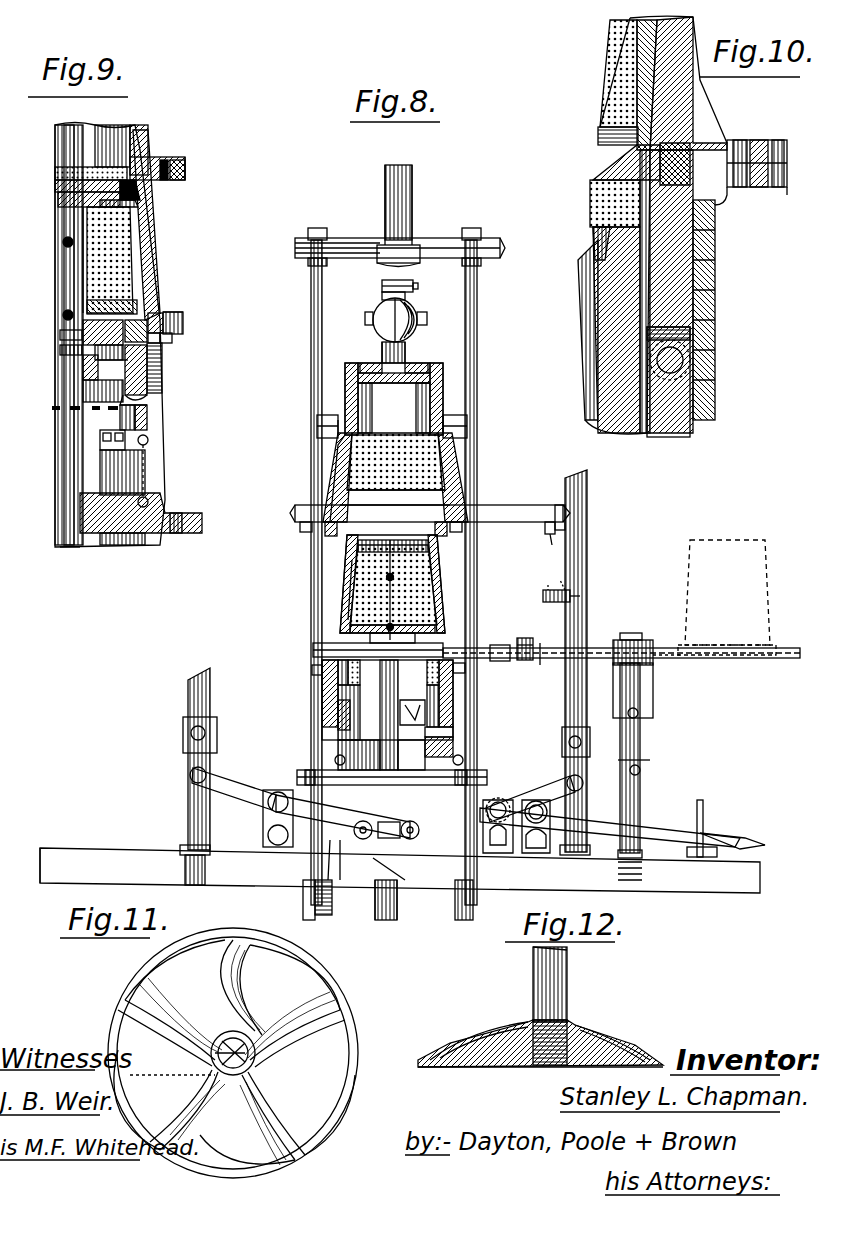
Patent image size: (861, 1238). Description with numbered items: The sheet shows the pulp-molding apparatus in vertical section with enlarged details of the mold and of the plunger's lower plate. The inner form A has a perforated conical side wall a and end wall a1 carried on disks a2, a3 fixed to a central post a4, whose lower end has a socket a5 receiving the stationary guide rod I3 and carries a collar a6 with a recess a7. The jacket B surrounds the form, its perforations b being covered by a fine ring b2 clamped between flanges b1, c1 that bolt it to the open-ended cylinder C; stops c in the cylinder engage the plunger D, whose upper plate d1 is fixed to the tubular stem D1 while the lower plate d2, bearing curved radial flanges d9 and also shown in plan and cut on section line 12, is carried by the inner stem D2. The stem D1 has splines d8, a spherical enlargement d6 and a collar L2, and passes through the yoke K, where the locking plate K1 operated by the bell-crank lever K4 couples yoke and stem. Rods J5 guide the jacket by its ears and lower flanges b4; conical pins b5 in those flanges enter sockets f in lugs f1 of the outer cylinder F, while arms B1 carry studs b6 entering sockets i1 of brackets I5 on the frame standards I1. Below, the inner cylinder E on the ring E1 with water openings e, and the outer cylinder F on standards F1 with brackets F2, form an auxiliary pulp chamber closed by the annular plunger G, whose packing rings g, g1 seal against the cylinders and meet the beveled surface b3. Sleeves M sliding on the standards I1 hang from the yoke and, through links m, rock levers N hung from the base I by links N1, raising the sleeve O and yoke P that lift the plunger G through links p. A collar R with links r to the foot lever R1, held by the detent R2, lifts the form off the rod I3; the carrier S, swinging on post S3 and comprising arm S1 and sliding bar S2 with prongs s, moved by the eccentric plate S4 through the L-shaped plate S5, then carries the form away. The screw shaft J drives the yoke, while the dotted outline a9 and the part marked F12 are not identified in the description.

In FIG. 8, the splines d8 is at (385, 185).
In FIG. 8, the tubular stem D1 is at (400, 210).
In FIG. 8, the yoke K is at (450, 250).
In FIG. 8, the bell-crank lever K4 is at (352, 248).
In FIG. 8, the locking plate K1 is at (418, 262).
In FIG. 8, the rods J5 is at (311, 355).
In FIG. 8, the collar L2 is at (382, 285).
In FIG. 8, the spherical enlargement d6 is at (415, 308).
In FIG. 8, the plunger D is at (412, 348).
In FIG. 8, the cylinder C is at (443, 392).
In FIG. 9, the cylinder C is at (140, 145).
In FIG. 8, the stops c is at (362, 372).
In FIG. 8, the lower plate d2 is at (395, 383).
In FIG. 12, the lower plate d2 is at (595, 1040).
In FIG. 8, the upper plate d1 is at (430, 380).
In FIG. 8, the flanges c1 is at (317, 428).
In FIG. 9, the flanges c1 is at (185, 162).
In FIG. 8, the flanges b1 is at (320, 440).
In FIG. 9, the flanges b1 is at (178, 182).
In FIG. 8, the perforated ring b2 is at (345, 455).
In FIG. 9, the perforated ring b2 is at (58, 170).
In FIG. 8, the perforations b is at (440, 462).
In FIG. 9, the perforations b is at (142, 195).
In FIG. 8, the jacket B is at (452, 498).
In FIG. 9, the jacket B is at (158, 272).
In FIG. 10, the jacket B is at (690, 35).
In FIG. 8, the flanges b4 is at (295, 512).
In FIG. 9, the flanges b4 is at (185, 320).
In FIG. 10, the flanges b4 is at (780, 140).
In FIG. 8, the rigid arms B1 is at (545, 512).
In FIG. 8, the conical pins b5 is at (302, 528).
In FIG. 9, the conical pins b5 is at (175, 312).
In FIG. 8, the conical studs b6 is at (550, 535).
In FIG. 8, the beveled surface b3 is at (332, 536).
In FIG. 9, the beveled surface b3 is at (165, 318).
In FIG. 10, the beveled surface b3 is at (705, 90).
In FIG. 8, the inner form A is at (435, 588).
In FIG. 9, the inner form A is at (135, 262).
In FIG. 10, the inner form A is at (605, 97).
In FIG. 8, the disk a2 is at (356, 556).
In FIG. 9, the disk a2 is at (58, 200).
In FIG. 8, the end wall a1 is at (390, 540).
In FIG. 9, the end wall a1 is at (58, 185).
In FIG. 8, the socket a5 is at (389, 602).
In FIG. 9, the socket a5 is at (65, 335).
In FIG. 8, the conical side wall a is at (348, 598).
In FIG. 9, the conical side wall a is at (140, 232).
In FIG. 10, the conical side wall a is at (610, 70).
In FIG. 11, the conical side wall a is at (130, 1073).
In FIG. 8, the disk a3 is at (348, 632).
In FIG. 9, the disk a3 is at (150, 300).
In FIG. 10, the disk a3 is at (598, 135).
In FIG. 8, the annular flange a6 is at (372, 645).
In FIG. 9, the annular flange a6 is at (62, 352).
In FIG. 8, the prongs s is at (450, 648).
In FIG. 8, the sleeve R is at (313, 650).
In FIG. 9, the sleeve R is at (83, 375).
In FIG. 8, the sliding bar S2 is at (508, 652).
In FIG. 8, the L-shaped plate S5 is at (526, 639).
In FIG. 8, the carrier S is at (535, 652).
In FIG. 8, the eccentrically pivoted plate S4 is at (640, 645).
In FIG. 8, the cone (dotted position) a9 is at (758, 640).
In FIG. 8, the horizontal arm S1 is at (625, 682).
In FIG. 8, the post S3 is at (640, 715).
In FIG. 8, the brackets I5 is at (543, 598).
In FIG. 8, the sockets i1 is at (552, 577).
In FIG. 8, the inner cylinder E is at (325, 688).
In FIG. 9, the inner cylinder E is at (150, 345).
In FIG. 10, the inner cylinder E is at (600, 210).
In FIG. 8, the sockets f is at (312, 668).
In FIG. 9, the sockets f is at (162, 336).
In FIG. 10, the sockets f is at (733, 195).
In FIG. 8, the annular ring E1 is at (338, 700).
In FIG. 9, the annular ring E1 is at (165, 355).
In FIG. 10, the annular ring E1 is at (598, 293).
In FIG. 8, the brackets F2 is at (338, 722).
In FIG. 9, the brackets F2 is at (110, 438).
In FIG. 8, the links r is at (389, 715).
In FIG. 8, the openings e is at (412, 705).
In FIG. 9, the openings e is at (52, 408).
In FIG. 10, the openings e is at (593, 415).
In FIG. 8, the lugs f1 is at (458, 675).
In FIG. 9, the lugs f1 is at (172, 338).
In FIG. 10, the lugs f1 is at (785, 195).
In FIG. 8, the outer cylinder F is at (453, 700).
In FIG. 9, the outer cylinder F is at (150, 372).
In FIG. 10, the outer cylinder F is at (715, 287).
In FIG. 8, the inner packing ring g1 is at (453, 730).
In FIG. 9, the inner packing ring g1 is at (150, 415).
In FIG. 10, the inner packing ring g1 is at (655, 163).
In FIG. 8, the packing ring g is at (453, 748).
In FIG. 9, the packing ring g is at (150, 395).
In FIG. 10, the packing ring g is at (710, 118).
In FIG. 8, the annular plunger G is at (485, 745).
In FIG. 9, the annular plunger G is at (150, 435).
In FIG. 10, the annular plunger G is at (715, 255).
In FIG. 8, the standards F1 is at (377, 755).
In FIG. 9, the standards F1 is at (100, 478).
In FIG. 10, the standards F1 is at (585, 290).
In FIG. 8, the links p is at (335, 758).
In FIG. 9, the links p is at (148, 480).
In FIG. 10, the links p is at (690, 418).
In FIG. 8, the yoke P is at (297, 777).
In FIG. 9, the yoke P is at (165, 515).
In FIG. 8, the sleeves M is at (188, 700).
In FIG. 8, the links m is at (183, 753).
In FIG. 8, the frame standards I1 is at (188, 805).
In FIG. 8, the rocking levers N is at (540, 805).
In FIG. 8, the links N1 is at (263, 818).
In FIG. 8, the sliding sleeve O is at (366, 820).
In FIG. 9, the sliding sleeve O is at (78, 555).
In FIG. 8, the foot lever R1 is at (597, 818).
In FIG. 8, the detent R2 is at (703, 812).
In FIG. 8, the base I is at (400, 869).
In FIG. 8, the screw shaft J is at (332, 900).
In FIG. 8, the guide rod I3 is at (375, 900).
In FIG. 9, the guide rod I3 is at (70, 455).
In FIG. 8, the casing extension F12 is at (405, 880).
In FIG. 9, the central post a4 is at (78, 278).
In FIG. 9, the annular recess a7 is at (130, 358).
In FIG. 11, the stem D2 is at (120, 1020).
In FIG. 12, the stem D2 is at (560, 975).
In FIG. 11, the section line 12 is at (255, 1053).
In FIG. 11, the radial flanges d9 is at (205, 950).
In FIG. 12, the radial flanges d9 is at (488, 1043).